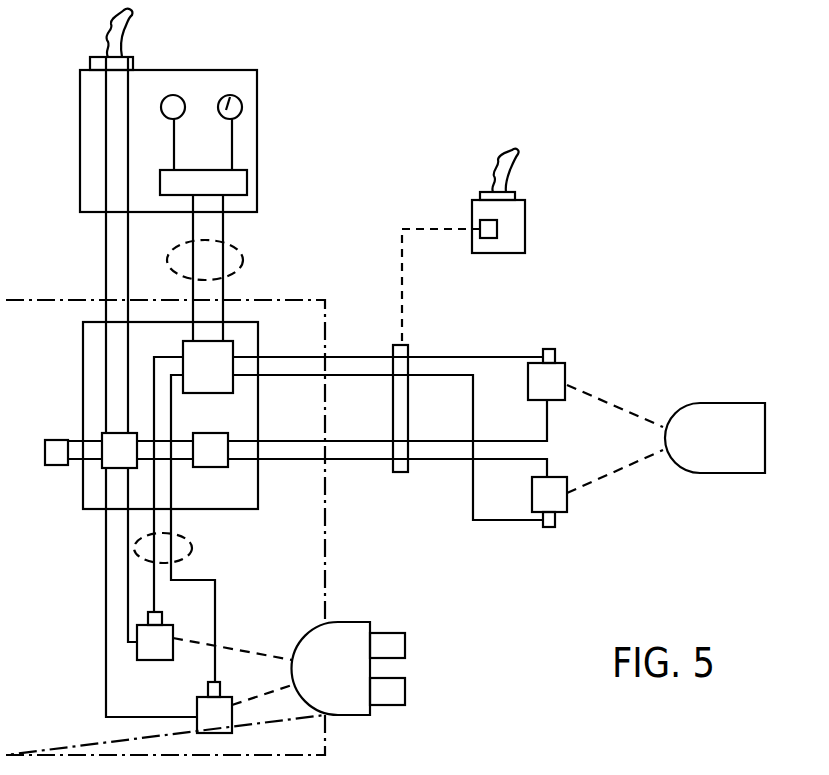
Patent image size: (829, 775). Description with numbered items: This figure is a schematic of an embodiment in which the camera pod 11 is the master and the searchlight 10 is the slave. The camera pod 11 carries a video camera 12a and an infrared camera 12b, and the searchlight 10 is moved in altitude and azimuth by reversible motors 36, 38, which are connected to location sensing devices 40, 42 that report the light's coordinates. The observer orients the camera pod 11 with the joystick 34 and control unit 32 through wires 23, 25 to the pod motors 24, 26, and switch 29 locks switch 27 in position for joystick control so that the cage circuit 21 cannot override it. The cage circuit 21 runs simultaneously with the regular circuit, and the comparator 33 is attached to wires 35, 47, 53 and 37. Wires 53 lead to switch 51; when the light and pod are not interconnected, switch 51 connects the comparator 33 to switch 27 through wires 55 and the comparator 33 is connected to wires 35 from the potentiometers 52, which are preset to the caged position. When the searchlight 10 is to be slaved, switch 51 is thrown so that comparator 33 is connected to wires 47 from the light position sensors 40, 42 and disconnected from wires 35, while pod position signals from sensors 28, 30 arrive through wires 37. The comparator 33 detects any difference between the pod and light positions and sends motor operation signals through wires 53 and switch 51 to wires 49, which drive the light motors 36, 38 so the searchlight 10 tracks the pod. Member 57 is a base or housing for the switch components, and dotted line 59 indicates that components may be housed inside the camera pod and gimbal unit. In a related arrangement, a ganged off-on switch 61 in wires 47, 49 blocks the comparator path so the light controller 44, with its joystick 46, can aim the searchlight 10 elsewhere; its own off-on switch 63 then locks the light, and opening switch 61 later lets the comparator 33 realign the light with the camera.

The searchlight 10 is at (700, 403).
The camera pod 11 is at (343, 620).
The video camera 12a is at (405, 633).
The infrared camera 12b is at (405, 698).
The cage circuit 21 is at (245, 255).
The wires 23 is at (127, 223).
The motor 24 is at (145, 660).
The wires 25 is at (106, 582).
The motor 26 is at (232, 720).
The switch 27 is at (100, 468).
The sensor 28 is at (160, 615).
The switch 29 is at (52, 439).
The sensor 30 is at (208, 685).
The control unit 32 is at (258, 122).
The comparator 33 is at (182, 353).
The joystick 34 is at (128, 32).
The wires 35 is at (223, 293).
The reversible motor 36 is at (565, 375).
The wires 37 is at (172, 527).
The reversible motor 38 is at (567, 500).
The location sensing device 40 is at (555, 350).
The location sensing device 42 is at (555, 522).
The controller 44 is at (525, 233).
The controller 46 is at (517, 172).
The wires 47 is at (418, 375).
The wires 49 is at (445, 458).
The switch 51 is at (228, 466).
The potentiometers 52 is at (232, 96).
The wires 53 is at (172, 422).
The wires 55 is at (173, 463).
The member 57 is at (258, 347).
The dotted line 59 is at (330, 535).
The ganged off-on switch 61 is at (393, 463).
The off-on switch 63 is at (480, 222).